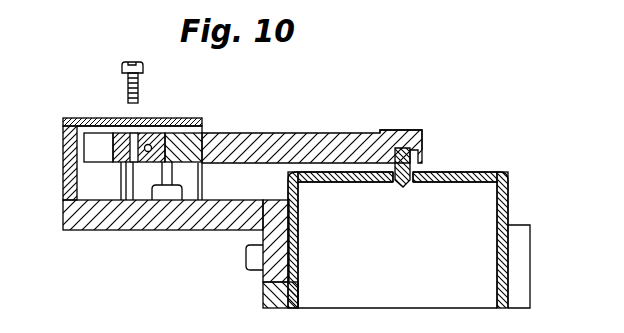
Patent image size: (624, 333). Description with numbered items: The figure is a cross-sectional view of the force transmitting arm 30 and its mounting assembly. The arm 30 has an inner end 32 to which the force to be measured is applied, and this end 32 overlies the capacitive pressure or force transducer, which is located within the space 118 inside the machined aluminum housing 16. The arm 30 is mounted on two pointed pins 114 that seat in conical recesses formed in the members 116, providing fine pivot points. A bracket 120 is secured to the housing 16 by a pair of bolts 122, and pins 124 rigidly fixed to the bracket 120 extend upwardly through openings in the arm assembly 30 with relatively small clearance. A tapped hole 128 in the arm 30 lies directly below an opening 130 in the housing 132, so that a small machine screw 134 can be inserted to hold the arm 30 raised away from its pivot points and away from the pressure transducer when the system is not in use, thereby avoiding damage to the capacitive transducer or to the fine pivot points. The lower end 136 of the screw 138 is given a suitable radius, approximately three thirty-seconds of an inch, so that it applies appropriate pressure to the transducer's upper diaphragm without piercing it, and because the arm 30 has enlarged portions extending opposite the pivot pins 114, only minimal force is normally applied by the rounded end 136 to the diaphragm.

The housing 16 is at (503, 197).
The force transmitting arm 30 is at (251, 127).
The inner end 32 is at (417, 130).
The pointed pins 114 is at (165, 178).
The members 116 is at (168, 195).
The space 118 is at (412, 275).
The bracket 120 is at (206, 222).
The bolts 122 is at (248, 272).
The pins 124 is at (120, 200).
The tapped hole 128 is at (127, 137).
The opening 130 is at (135, 122).
The housing 132 is at (65, 118).
The machine screw 134 is at (127, 62).
The lower end 136 is at (405, 184).
The screw 138 is at (420, 152).